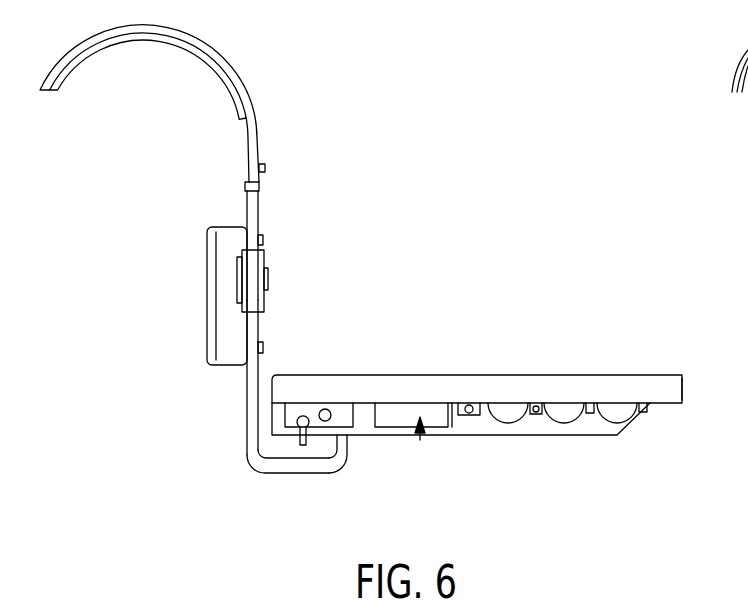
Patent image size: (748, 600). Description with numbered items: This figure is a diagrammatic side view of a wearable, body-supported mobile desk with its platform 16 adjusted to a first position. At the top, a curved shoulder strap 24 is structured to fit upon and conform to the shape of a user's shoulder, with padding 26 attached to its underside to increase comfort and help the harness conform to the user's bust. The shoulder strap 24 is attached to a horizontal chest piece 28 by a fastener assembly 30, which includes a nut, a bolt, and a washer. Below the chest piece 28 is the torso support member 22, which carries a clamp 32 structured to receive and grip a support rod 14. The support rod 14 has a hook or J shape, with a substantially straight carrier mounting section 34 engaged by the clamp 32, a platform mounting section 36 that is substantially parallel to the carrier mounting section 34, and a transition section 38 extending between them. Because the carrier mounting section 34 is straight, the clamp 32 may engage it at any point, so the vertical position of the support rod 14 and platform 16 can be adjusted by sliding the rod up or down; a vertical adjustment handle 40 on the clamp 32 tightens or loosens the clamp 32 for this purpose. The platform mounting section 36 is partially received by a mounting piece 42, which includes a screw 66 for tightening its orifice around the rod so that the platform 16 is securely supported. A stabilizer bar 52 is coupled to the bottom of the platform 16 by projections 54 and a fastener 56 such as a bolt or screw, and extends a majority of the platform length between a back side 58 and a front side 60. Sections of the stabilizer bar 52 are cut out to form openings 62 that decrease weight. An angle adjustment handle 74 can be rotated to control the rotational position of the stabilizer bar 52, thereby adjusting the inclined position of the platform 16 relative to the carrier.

The support rod 14 is at (258, 370).
The platform 16 is at (655, 375).
The torso support member 22 is at (205, 352).
The curved shoulder strap 24 is at (233, 78).
The padding 26 is at (207, 66).
The horizontal chest piece 28 is at (259, 187).
The fastener assembly 30 is at (265, 168).
The clamp 32 is at (262, 257).
The carrier mounting section 34 is at (247, 212).
The platform mounting section 36 is at (345, 447).
The transition section 38 is at (290, 476).
The vertical adjustment handle 40 is at (266, 291).
The mounting piece 42 is at (347, 403).
The stabilizer bar 52 is at (508, 436).
The projection 54 is at (462, 418).
The fastener 56 is at (480, 418).
The back side 58 is at (272, 393).
The front side 60 is at (684, 389).
The opening 62 is at (420, 440).
The screw 66 is at (329, 410).
The angle adjustment handle 74 is at (297, 441).